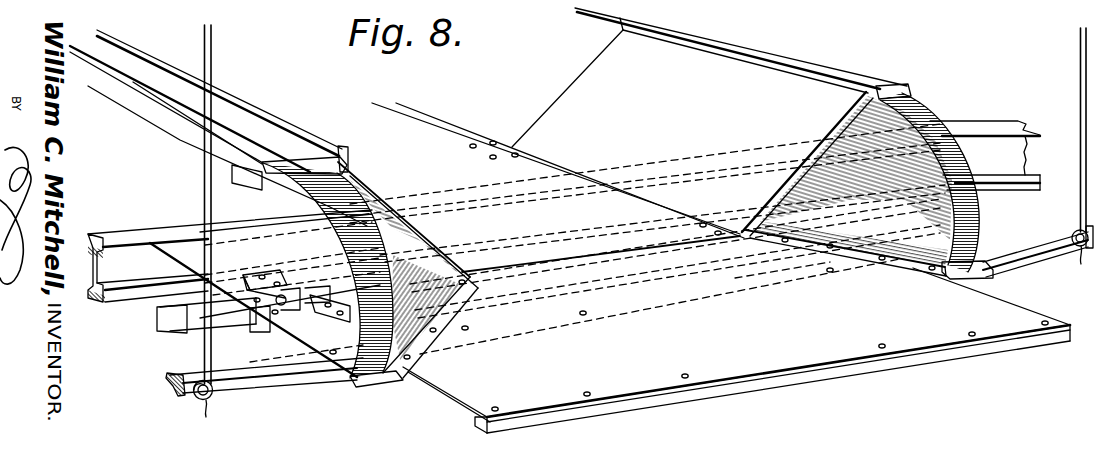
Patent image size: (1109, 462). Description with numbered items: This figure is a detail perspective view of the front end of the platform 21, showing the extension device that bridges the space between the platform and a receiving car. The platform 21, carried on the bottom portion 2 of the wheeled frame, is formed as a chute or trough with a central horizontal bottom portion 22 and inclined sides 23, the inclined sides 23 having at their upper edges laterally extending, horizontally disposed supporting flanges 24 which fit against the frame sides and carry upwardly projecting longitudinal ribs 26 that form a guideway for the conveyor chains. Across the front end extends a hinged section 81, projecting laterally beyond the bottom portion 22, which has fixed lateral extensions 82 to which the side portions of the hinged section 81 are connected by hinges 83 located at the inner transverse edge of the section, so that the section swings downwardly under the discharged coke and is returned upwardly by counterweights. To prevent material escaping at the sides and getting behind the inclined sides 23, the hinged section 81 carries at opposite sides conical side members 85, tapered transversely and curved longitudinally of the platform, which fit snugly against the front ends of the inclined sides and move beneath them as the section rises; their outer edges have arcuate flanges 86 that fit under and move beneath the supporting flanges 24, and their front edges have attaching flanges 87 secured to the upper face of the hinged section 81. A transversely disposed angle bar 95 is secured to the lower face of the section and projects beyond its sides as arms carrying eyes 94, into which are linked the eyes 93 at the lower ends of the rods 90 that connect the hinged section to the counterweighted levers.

The bottom portion 2 is at (113, 226).
The platform 21 is at (162, 58).
The central horizontal bottom portion 22 is at (558, 187).
The inclined sides 23 is at (187, 120).
The supporting flanges 24 is at (253, 128).
The longitudinal ribs 26 is at (341, 157).
The hinged section 81 is at (736, 350).
The fixed lateral extensions 82 is at (290, 266).
The hinges 83 is at (316, 288).
The conical side members 85 is at (448, 285).
The arcuate flanges 86 is at (350, 374).
The attaching flanges 87 is at (418, 340).
The rods 90 is at (204, 186).
The eyes 93 is at (214, 394).
The eyes 94 is at (643, 341).
The angle bar 95 is at (172, 385).